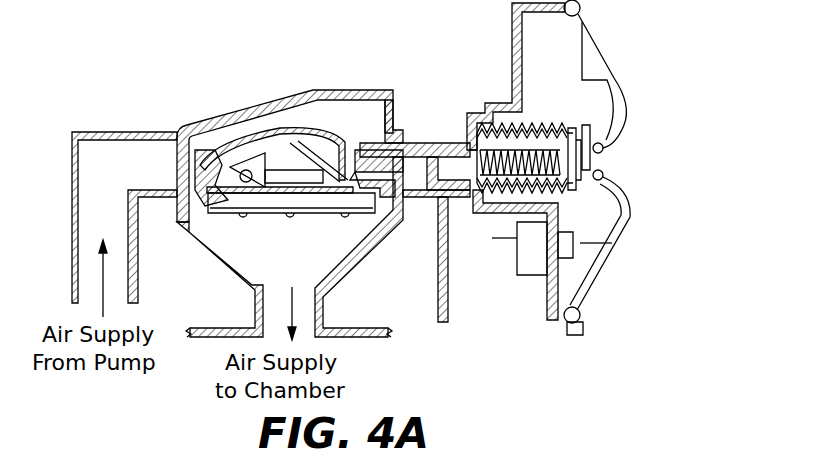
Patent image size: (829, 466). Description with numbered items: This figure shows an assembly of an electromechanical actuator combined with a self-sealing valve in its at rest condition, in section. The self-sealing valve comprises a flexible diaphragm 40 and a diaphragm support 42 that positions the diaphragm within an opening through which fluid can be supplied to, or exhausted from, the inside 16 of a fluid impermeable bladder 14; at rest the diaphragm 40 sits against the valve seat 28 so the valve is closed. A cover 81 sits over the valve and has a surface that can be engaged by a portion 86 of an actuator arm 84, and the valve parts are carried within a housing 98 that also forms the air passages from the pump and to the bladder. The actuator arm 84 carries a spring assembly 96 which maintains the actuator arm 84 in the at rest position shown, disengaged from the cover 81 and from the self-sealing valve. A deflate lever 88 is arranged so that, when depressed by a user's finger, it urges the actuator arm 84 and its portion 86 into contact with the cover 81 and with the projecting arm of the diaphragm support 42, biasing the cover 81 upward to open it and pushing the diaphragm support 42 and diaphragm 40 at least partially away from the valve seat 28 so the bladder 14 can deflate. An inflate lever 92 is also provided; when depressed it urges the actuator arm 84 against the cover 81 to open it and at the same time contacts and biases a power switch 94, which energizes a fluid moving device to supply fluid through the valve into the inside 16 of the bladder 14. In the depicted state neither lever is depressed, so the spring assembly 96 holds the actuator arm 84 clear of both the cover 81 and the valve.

The fluid impermeable bladder 14 is at (367, 328).
The inside of fluid impermeable bladder 16 is at (428, 377).
The valve seat 28 is at (230, 212).
The flexible diaphragm 40 is at (296, 195).
The diaphragm support 42 is at (262, 168).
The cover 81 is at (303, 140).
The actuator arm 84 is at (450, 163).
The portion of actuator arm 86 is at (378, 150).
The deflate lever 88 is at (608, 62).
The inflate lever 92 is at (608, 262).
The power switch 94 is at (577, 233).
The spring assembly 96 is at (507, 170).
The housing 98 is at (192, 123).